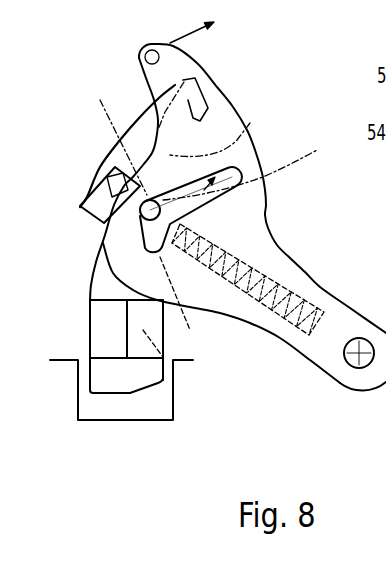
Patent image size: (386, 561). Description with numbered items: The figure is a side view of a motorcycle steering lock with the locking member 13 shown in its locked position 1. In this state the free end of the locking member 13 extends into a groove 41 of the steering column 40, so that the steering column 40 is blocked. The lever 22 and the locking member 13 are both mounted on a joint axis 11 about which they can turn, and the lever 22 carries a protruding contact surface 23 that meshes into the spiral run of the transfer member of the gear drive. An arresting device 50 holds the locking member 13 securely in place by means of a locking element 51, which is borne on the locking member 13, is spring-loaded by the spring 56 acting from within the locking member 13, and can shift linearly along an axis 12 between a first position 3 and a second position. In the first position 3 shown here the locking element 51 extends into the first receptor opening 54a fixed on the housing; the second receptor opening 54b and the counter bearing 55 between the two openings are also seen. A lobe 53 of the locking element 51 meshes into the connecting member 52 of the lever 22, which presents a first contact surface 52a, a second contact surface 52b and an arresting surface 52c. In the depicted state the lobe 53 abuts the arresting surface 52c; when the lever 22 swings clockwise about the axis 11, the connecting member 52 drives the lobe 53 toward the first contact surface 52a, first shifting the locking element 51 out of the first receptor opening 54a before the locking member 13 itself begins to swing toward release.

The locked position 1 is at (262, 432).
The first position 3 is at (58, 126).
The axis 11 is at (357, 364).
The axis 12 is at (336, 337).
The locking member 13 is at (178, 385).
The lever 22 is at (210, 83).
The protruding contact surface 23 is at (145, 57).
The steering column 40 is at (50, 397).
The groove 41 is at (127, 410).
The arresting device 50 is at (103, 228).
The locking element 51 is at (170, 224).
The connecting member 52 is at (200, 170).
The first contact surface 52a is at (175, 300).
The second contact surface 52b is at (240, 175).
The arresting surface 52c is at (103, 187).
The lobe 53 is at (109, 137).
The first receptor opening 54a is at (97, 162).
The second receptor opening 54b is at (208, 82).
The counter bearing 55 is at (250, 123).
The spring 56 is at (268, 273).